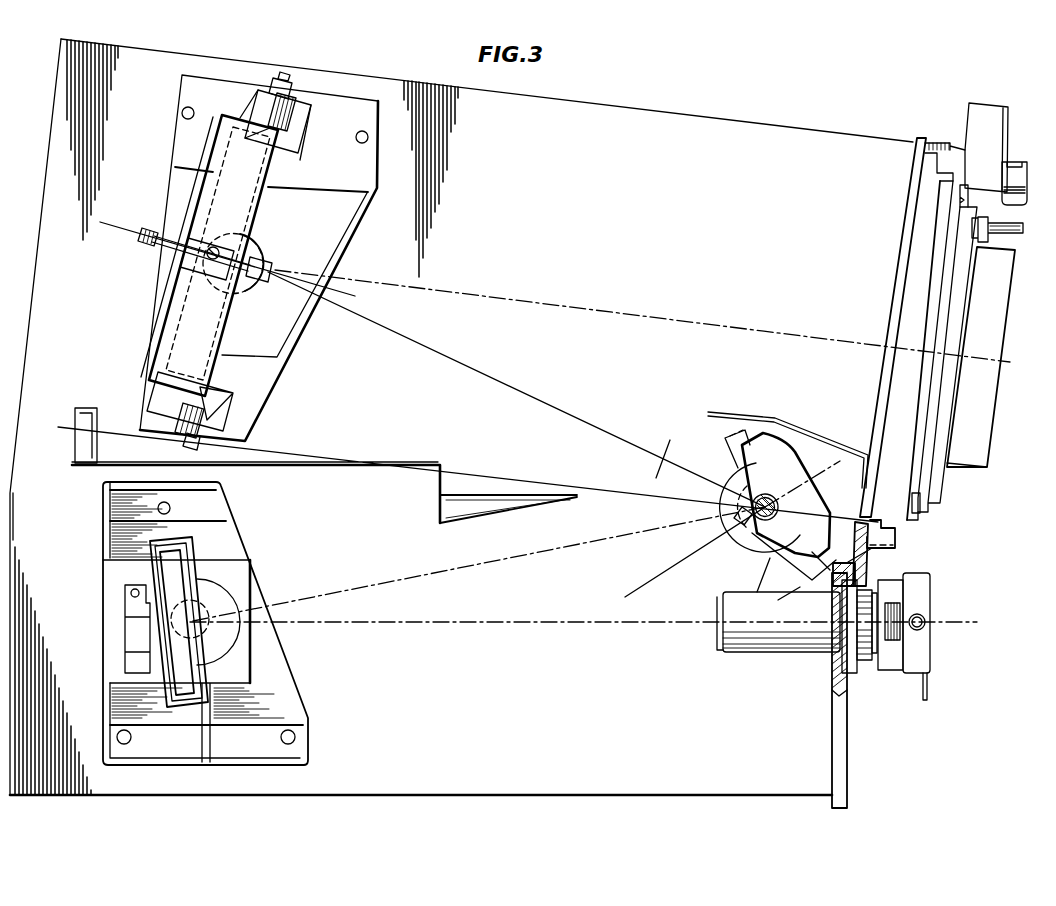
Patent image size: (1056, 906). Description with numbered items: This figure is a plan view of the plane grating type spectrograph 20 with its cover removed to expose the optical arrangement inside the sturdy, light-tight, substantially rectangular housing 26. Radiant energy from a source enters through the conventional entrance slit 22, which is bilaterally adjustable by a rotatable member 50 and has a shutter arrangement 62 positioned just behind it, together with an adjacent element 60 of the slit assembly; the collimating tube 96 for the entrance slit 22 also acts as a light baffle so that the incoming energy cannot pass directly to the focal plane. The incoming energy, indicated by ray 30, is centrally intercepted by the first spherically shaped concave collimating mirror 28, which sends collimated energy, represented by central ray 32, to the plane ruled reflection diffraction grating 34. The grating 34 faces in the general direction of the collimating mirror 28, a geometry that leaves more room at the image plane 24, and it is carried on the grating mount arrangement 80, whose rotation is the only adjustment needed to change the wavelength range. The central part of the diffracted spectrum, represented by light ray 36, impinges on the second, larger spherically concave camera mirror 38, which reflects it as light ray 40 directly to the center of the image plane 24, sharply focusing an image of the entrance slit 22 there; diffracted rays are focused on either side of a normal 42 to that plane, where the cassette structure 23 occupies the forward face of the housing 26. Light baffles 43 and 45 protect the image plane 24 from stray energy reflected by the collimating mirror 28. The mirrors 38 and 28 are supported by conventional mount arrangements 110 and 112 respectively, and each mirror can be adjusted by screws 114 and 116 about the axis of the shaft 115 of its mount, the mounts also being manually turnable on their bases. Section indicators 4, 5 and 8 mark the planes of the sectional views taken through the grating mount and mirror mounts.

The section line 4- 4 is at (697, 447).
The section line 5- 5 is at (754, 592).
The section line 8- 8 is at (114, 248).
The spectrograph 20 is at (641, 108).
The entrance slit 22 is at (842, 637).
The cassette structure 23 is at (997, 390).
The image plane 24 is at (943, 438).
The housing 26 is at (703, 116).
The collimating mirror 28 is at (178, 570).
The ray 30 is at (489, 621).
The central ray 32 is at (589, 542).
The plane diffraction grating 34 is at (790, 478).
The light ray 36 is at (480, 379).
The camera mirror 38 is at (236, 198).
The light ray 40 is at (559, 305).
The normal 42 is at (654, 578).
The light baffle 43 is at (747, 411).
The light baffle 45 is at (371, 470).
The rotatable member 50 is at (921, 613).
The bearing block 60 is at (916, 651).
The shutter arrangement 62 is at (892, 643).
The grating mount arrangement 80 is at (727, 533).
The collimating tube 96 is at (773, 633).
The mount arrangement 110 is at (212, 150).
The mount arrangement 112 is at (101, 575).
The screw 114 is at (262, 278).
The shaft 115 is at (282, 128).
The screw 116 is at (140, 237).